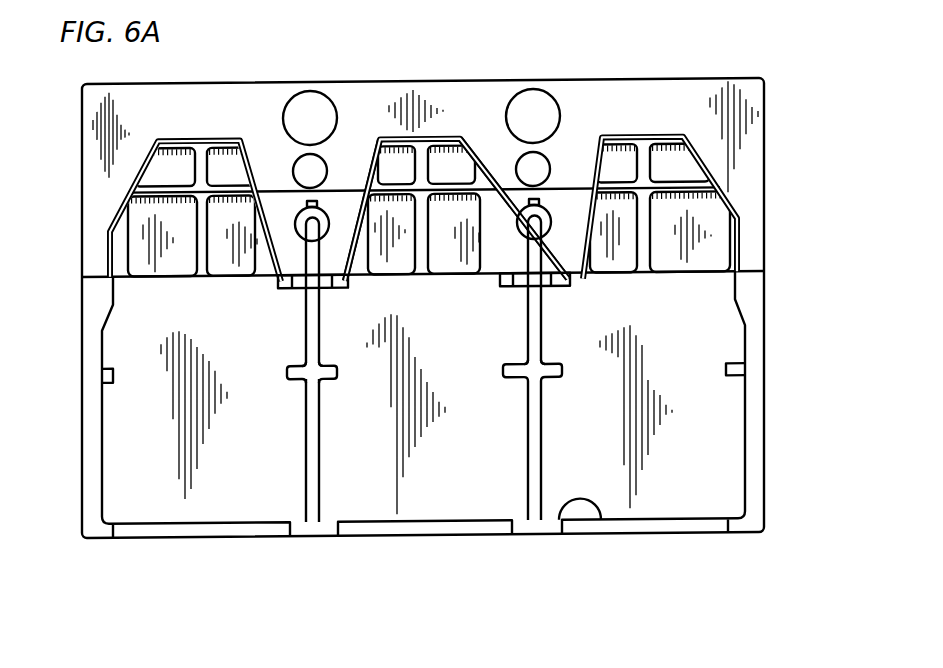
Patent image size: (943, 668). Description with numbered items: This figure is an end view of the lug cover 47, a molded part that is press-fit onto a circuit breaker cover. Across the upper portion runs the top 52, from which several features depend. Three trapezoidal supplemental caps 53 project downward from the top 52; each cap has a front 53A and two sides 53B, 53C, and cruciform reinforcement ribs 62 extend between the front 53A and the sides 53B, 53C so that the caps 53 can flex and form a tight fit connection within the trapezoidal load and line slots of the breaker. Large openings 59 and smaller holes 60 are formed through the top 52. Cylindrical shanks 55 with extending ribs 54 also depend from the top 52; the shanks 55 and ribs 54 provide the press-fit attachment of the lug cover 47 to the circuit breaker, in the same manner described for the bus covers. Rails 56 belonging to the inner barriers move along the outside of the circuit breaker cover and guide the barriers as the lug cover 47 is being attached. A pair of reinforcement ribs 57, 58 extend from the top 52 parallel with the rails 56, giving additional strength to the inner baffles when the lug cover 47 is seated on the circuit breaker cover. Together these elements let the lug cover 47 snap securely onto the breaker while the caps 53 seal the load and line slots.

The lug cover 47 is at (71, 336).
The top 52 is at (163, 120).
The trapezoidal supplemental caps 53 is at (720, 172).
The front 53A is at (428, 143).
The side 53B is at (475, 146).
The side 53C is at (362, 140).
The ribs 54 is at (521, 209).
The cylindrical shanks 55 is at (525, 240).
The rails 56 is at (560, 292).
The reinforcement rib 57 is at (563, 377).
The reinforcement rib 58 is at (598, 522).
The large openings 59 is at (514, 110).
The smaller holes 60 is at (524, 162).
The cruciform reinforcement ribs 62 is at (157, 200).